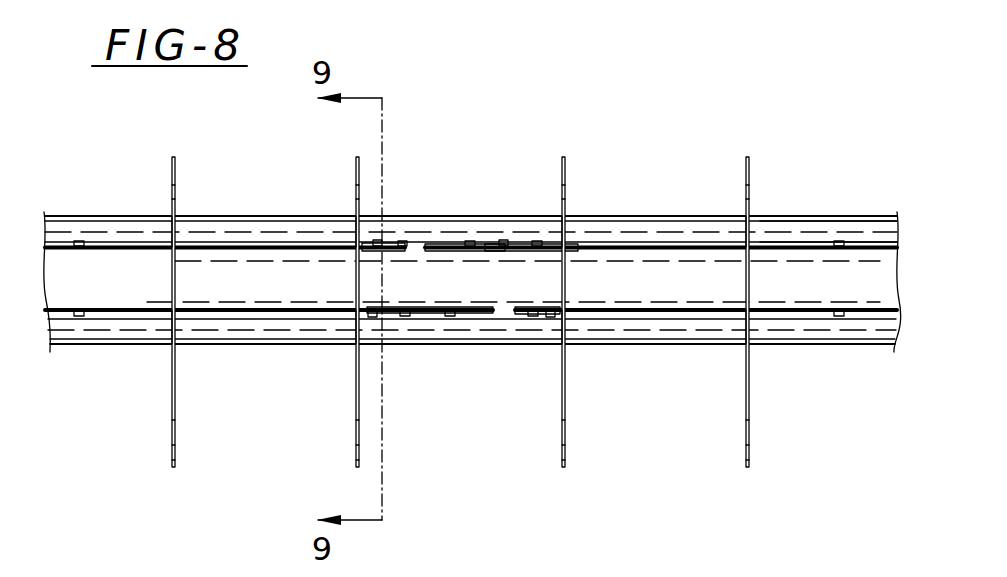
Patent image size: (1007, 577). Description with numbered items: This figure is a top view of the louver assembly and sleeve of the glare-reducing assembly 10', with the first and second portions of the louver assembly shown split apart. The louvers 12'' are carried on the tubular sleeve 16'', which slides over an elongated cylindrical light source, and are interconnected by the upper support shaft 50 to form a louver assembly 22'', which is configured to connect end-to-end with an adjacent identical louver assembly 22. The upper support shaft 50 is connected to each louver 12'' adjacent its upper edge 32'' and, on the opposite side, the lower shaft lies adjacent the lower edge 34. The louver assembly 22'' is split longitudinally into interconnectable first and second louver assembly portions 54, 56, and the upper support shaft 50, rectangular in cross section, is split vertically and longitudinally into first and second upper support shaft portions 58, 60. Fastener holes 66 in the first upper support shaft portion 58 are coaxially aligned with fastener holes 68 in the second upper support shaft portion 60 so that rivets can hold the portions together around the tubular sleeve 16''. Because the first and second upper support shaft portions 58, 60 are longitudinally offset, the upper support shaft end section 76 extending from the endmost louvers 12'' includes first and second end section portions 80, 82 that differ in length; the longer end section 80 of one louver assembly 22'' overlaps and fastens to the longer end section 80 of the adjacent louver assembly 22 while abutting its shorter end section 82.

The window glare-reducing assembly 10' is at (471, 196).
The louver 12'' is at (465, 326).
The tubular sleeve 16'' is at (501, 182).
The louver assembly 22 is at (789, 284).
The louver assembly 22'' is at (137, 343).
The upper edge 32'' is at (459, 311).
The lower edge 34 is at (130, 240).
The upper support shaft 50 is at (600, 299).
The first louver assembly portion 54 is at (812, 238).
The second louver assembly portion 56 is at (127, 320).
The first upper support shaft portion 58 is at (314, 245).
The second upper support shaft portion 60 is at (270, 320).
The fastener hole 66 is at (77, 240).
The fastener hole 68 is at (50, 346).
The upper support shaft end section 76 is at (371, 237).
The first end section portion 80 is at (487, 243).
The second end section portion 82 is at (396, 242).